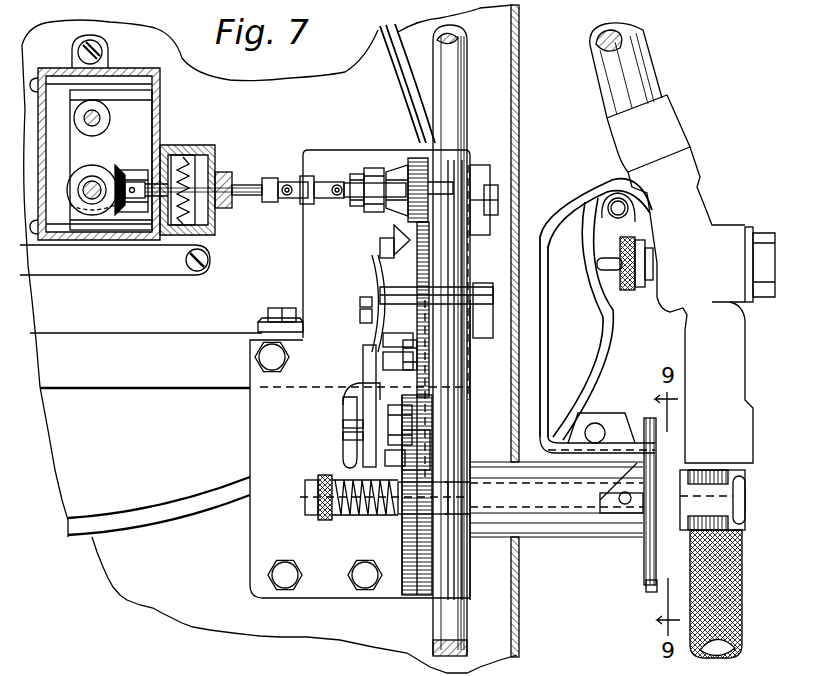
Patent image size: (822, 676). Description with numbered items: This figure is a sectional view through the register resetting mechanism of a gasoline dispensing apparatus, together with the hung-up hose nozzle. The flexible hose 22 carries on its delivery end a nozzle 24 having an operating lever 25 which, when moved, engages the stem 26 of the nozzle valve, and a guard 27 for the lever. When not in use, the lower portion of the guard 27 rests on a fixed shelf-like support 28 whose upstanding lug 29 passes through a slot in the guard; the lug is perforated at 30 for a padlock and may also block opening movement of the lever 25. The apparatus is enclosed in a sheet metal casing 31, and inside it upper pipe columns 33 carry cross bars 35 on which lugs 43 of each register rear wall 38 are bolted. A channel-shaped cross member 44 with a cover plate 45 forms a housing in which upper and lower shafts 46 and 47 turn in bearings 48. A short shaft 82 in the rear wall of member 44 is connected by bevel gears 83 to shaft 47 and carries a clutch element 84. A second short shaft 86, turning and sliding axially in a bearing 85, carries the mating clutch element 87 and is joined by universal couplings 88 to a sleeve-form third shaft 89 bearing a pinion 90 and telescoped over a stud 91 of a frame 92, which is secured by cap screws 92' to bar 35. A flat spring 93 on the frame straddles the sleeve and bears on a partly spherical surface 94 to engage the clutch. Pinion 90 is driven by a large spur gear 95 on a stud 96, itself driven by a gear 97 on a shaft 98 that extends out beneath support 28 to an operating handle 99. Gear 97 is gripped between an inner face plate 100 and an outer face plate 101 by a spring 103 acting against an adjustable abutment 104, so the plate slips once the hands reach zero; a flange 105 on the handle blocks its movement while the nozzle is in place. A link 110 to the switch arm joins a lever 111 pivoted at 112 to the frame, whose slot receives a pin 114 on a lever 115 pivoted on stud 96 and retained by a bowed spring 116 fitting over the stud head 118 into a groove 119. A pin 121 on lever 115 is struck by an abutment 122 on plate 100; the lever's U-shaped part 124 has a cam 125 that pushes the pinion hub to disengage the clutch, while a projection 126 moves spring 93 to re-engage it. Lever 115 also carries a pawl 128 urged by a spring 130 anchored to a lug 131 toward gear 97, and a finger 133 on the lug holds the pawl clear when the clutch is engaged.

The flexible hose 22 is at (742, 603).
The nozzle 24 is at (682, 243).
The operating lever 25 is at (595, 329).
The stem 26 is at (622, 288).
The guard 27 is at (541, 345).
The support 28 is at (572, 520).
The lug 29 is at (644, 420).
The perforation 30 is at (596, 423).
The casing 31 is at (520, 638).
The pipe columns 33 is at (464, 62).
The cross bars 35 is at (146, 360).
The rear wall 38 is at (159, 470).
The lugs 43 is at (262, 326).
The cross member 44 is at (160, 90).
The cover plate 45 is at (45, 72).
The upper shaft 46 is at (100, 118).
The lower shaft 47 is at (88, 216).
The bearings 48 is at (120, 172).
The short shaft 82 is at (160, 232).
The bevel gears 83 is at (118, 166).
The clutch element 84 is at (181, 155).
The bearing 85 is at (215, 230).
The second short shaft 86 is at (239, 183).
The clutch element 87 is at (223, 170).
The universal couplings 88 is at (318, 178).
The third short shaft 89 is at (372, 168).
The pinion 90 is at (412, 158).
The stud 91 is at (470, 212).
The frame 92 is at (377, 359).
The cap screws 92' is at (278, 481).
The flat spring 93 is at (356, 172).
The partly spherical surface 94 is at (370, 214).
The spur gear 95 is at (456, 256).
The stud 96 is at (416, 272).
The gear 97 is at (416, 598).
The shaft 98 is at (305, 500).
The operating handle 99 is at (720, 500).
The inner face plate 100 is at (368, 582).
The outer face plate 101 is at (468, 590).
The spring 103 is at (341, 520).
The adjustable abutment 104 is at (320, 518).
The flange 105 is at (647, 592).
The link 110 is at (343, 452).
The lever 111 is at (363, 405).
The pivot 112 is at (343, 435).
The pin 114 is at (343, 423).
The lever 115 is at (372, 272).
The bowed spring 116 is at (378, 290).
The head 118 is at (360, 302).
The circumferential groove 119 is at (360, 316).
The pin 121 is at (412, 425).
The abutment 122 is at (347, 380).
The U-shaped part 124 is at (380, 247).
The cam 125 is at (398, 241).
The projection 126 is at (406, 162).
The pawl 128 is at (430, 440).
The spring 130 is at (383, 340).
The lug 131 is at (383, 362).
The finger 133 is at (420, 366).